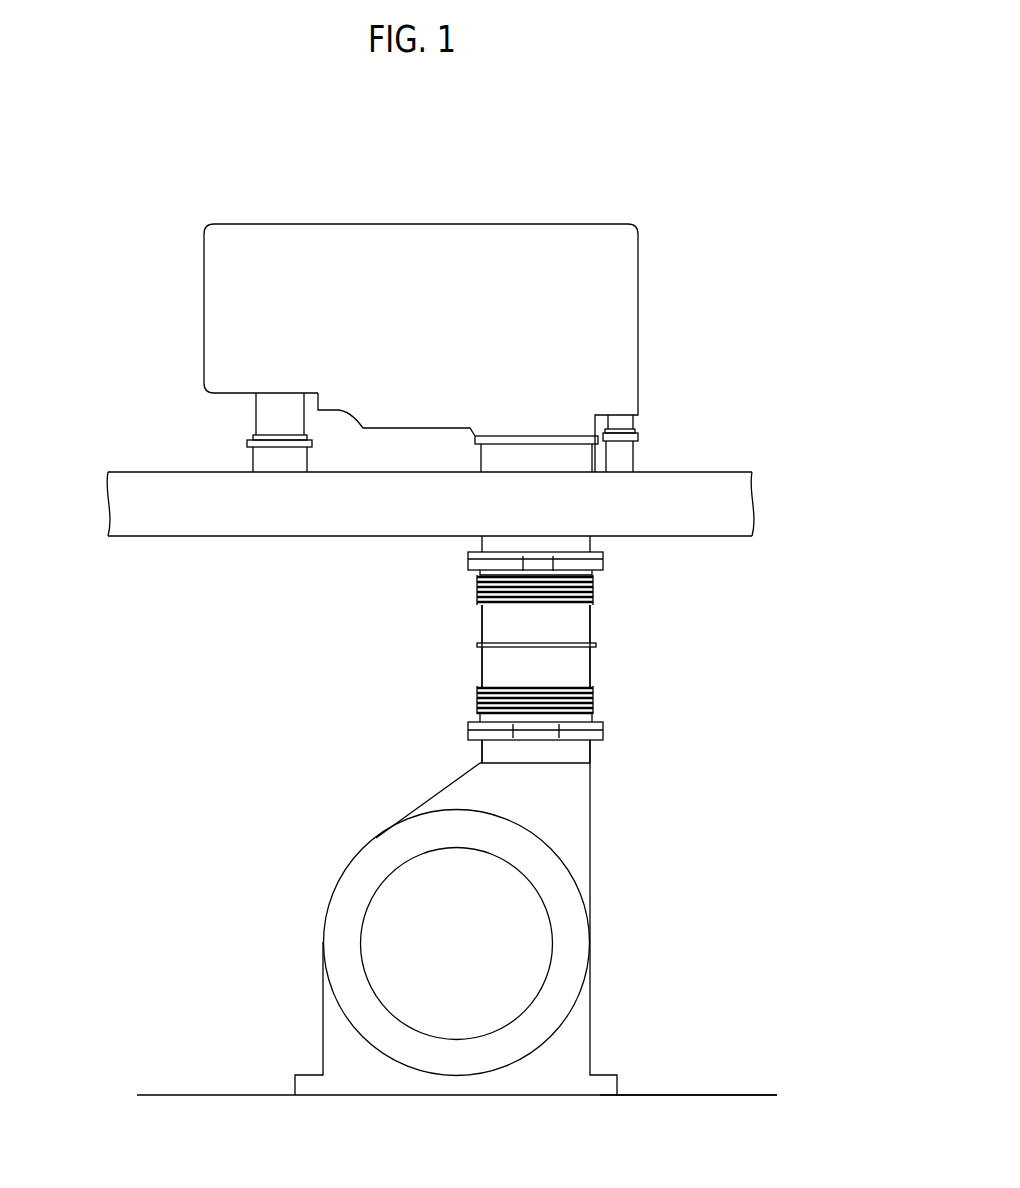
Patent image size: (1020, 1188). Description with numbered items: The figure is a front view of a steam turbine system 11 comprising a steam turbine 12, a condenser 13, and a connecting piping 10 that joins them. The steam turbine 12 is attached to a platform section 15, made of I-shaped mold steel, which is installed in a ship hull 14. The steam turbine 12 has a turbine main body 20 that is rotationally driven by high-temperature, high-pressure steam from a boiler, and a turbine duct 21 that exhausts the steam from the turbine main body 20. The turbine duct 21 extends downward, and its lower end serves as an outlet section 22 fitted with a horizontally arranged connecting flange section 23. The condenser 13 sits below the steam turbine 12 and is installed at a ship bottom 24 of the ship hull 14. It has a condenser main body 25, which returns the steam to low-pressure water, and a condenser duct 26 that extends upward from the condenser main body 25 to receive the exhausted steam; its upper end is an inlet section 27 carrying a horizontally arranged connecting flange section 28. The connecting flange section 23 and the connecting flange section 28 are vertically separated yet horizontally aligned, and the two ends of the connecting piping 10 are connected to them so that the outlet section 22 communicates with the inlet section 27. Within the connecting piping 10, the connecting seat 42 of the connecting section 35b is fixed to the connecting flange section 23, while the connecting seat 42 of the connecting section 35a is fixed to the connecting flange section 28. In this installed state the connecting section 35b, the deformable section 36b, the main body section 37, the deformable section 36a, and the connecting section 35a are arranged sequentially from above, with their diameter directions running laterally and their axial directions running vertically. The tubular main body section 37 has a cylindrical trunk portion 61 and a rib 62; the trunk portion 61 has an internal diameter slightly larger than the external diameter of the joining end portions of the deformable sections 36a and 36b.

The connecting piping 10 is at (630, 648).
The steam turbine system 11 is at (700, 160).
The steam turbine 12 is at (552, 212).
The condenser 13 is at (310, 912).
The ship hull 14 is at (162, 1080).
The platform section 15 is at (148, 520).
The turbine main body 20 is at (612, 310).
The turbine duct 21 is at (572, 458).
The outlet section 22 is at (523, 558).
The connecting flange section 23 is at (468, 556).
The ship bottom 24 is at (708, 1095).
The condenser main body 25 is at (520, 938).
The condenser duct 26 is at (565, 805).
The inlet section 27 is at (513, 730).
The connecting flange section 28 is at (468, 737).
The connecting section 35a is at (603, 728).
The connecting section 35b is at (603, 565).
The deformable section 36a is at (593, 700).
The deformable section 36b is at (593, 588).
The main body section 37 is at (592, 668).
The connecting seat 42 is at (553, 563).
The trunk portion 61 is at (495, 668).
The rib 62 is at (477, 645).